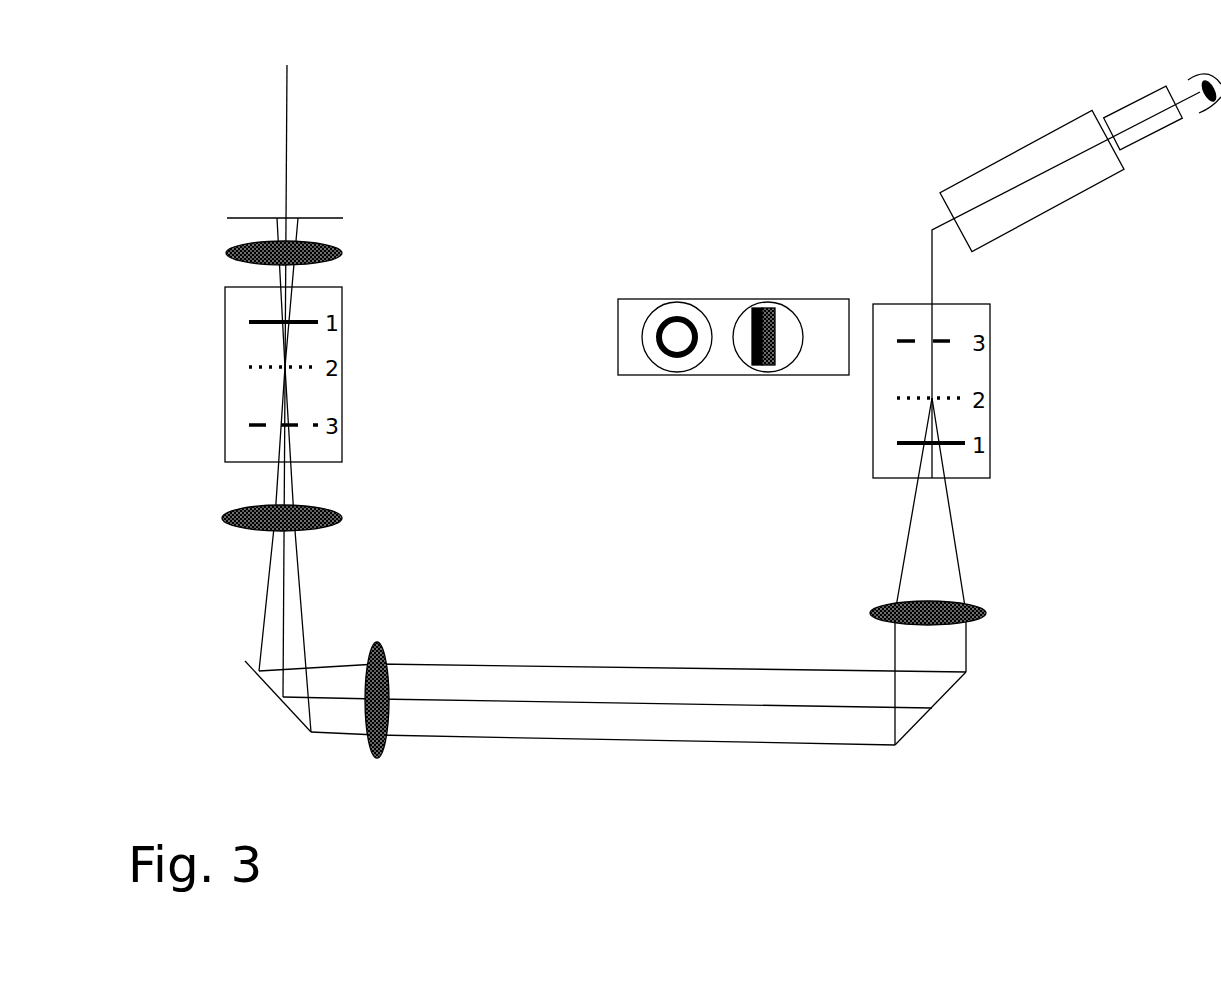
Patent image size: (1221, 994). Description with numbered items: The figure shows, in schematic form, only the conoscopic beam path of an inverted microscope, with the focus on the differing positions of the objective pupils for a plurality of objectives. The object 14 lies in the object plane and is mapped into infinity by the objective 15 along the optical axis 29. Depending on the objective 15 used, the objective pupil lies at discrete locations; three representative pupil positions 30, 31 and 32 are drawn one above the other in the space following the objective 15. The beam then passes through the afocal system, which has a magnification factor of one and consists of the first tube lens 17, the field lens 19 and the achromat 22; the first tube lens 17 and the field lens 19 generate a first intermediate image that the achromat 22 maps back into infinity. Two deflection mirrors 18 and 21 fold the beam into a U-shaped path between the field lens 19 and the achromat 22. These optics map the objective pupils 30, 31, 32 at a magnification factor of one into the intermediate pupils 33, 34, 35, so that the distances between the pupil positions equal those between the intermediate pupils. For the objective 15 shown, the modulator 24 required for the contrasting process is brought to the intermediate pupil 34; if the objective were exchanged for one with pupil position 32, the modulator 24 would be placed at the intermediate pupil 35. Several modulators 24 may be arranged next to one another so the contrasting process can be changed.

The optical axis 29 is at (297, 105).
The object 14 is at (298, 216).
The objective 15 is at (229, 246).
The objective pupil position 30 is at (236, 326).
The objective pupil position 31 is at (236, 366).
The objective pupil position 32 is at (240, 424).
The first tube lens 17 is at (213, 528).
The first deflection mirror 18 is at (285, 710).
The field lens 19 is at (384, 648).
The modulator 24 is at (677, 298).
The second deflection mirror 21 is at (946, 697).
The achromat 22 is at (992, 609).
The intermediate pupil 33 is at (992, 448).
The intermediate pupil 34 is at (992, 401).
The intermediate pupil 35 is at (992, 342).